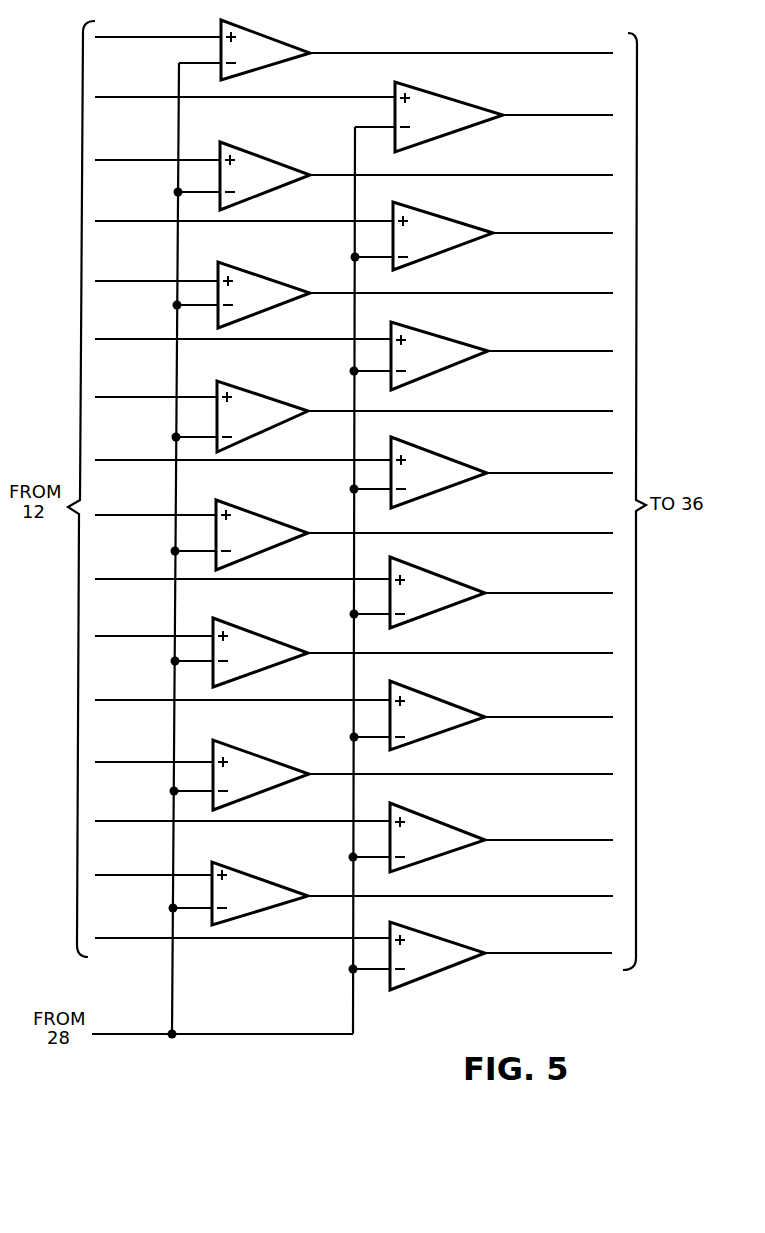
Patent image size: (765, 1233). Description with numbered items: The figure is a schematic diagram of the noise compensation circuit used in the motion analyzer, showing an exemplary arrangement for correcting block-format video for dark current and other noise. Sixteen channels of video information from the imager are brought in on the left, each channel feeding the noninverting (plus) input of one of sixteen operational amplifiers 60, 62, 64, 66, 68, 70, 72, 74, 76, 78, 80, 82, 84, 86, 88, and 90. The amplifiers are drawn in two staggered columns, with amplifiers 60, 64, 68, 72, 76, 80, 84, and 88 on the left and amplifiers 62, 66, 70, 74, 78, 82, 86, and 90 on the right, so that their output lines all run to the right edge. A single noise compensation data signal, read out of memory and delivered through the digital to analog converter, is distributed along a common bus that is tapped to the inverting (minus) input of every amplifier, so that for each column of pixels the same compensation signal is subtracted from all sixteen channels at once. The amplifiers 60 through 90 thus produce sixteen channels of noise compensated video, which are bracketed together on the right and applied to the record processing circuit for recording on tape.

The operational amplifier 60 is at (279, 41).
The operational amplifier 62 is at (460, 102).
The operational amplifier 64 is at (278, 163).
The operational amplifier 66 is at (465, 224).
The operational amplifier 68 is at (272, 280).
The operational amplifier 70 is at (462, 343).
The operational amplifier 72 is at (268, 398).
The operational amplifier 74 is at (455, 461).
The operational amplifier 76 is at (271, 520).
The operational amplifier 78 is at (460, 584).
The operational amplifier 80 is at (283, 644).
The operational amplifier 82 is at (465, 709).
The operational amplifier 84 is at (280, 764).
The operational amplifier 86 is at (458, 829).
The operational amplifier 88 is at (270, 883).
The operational amplifier 90 is at (465, 946).